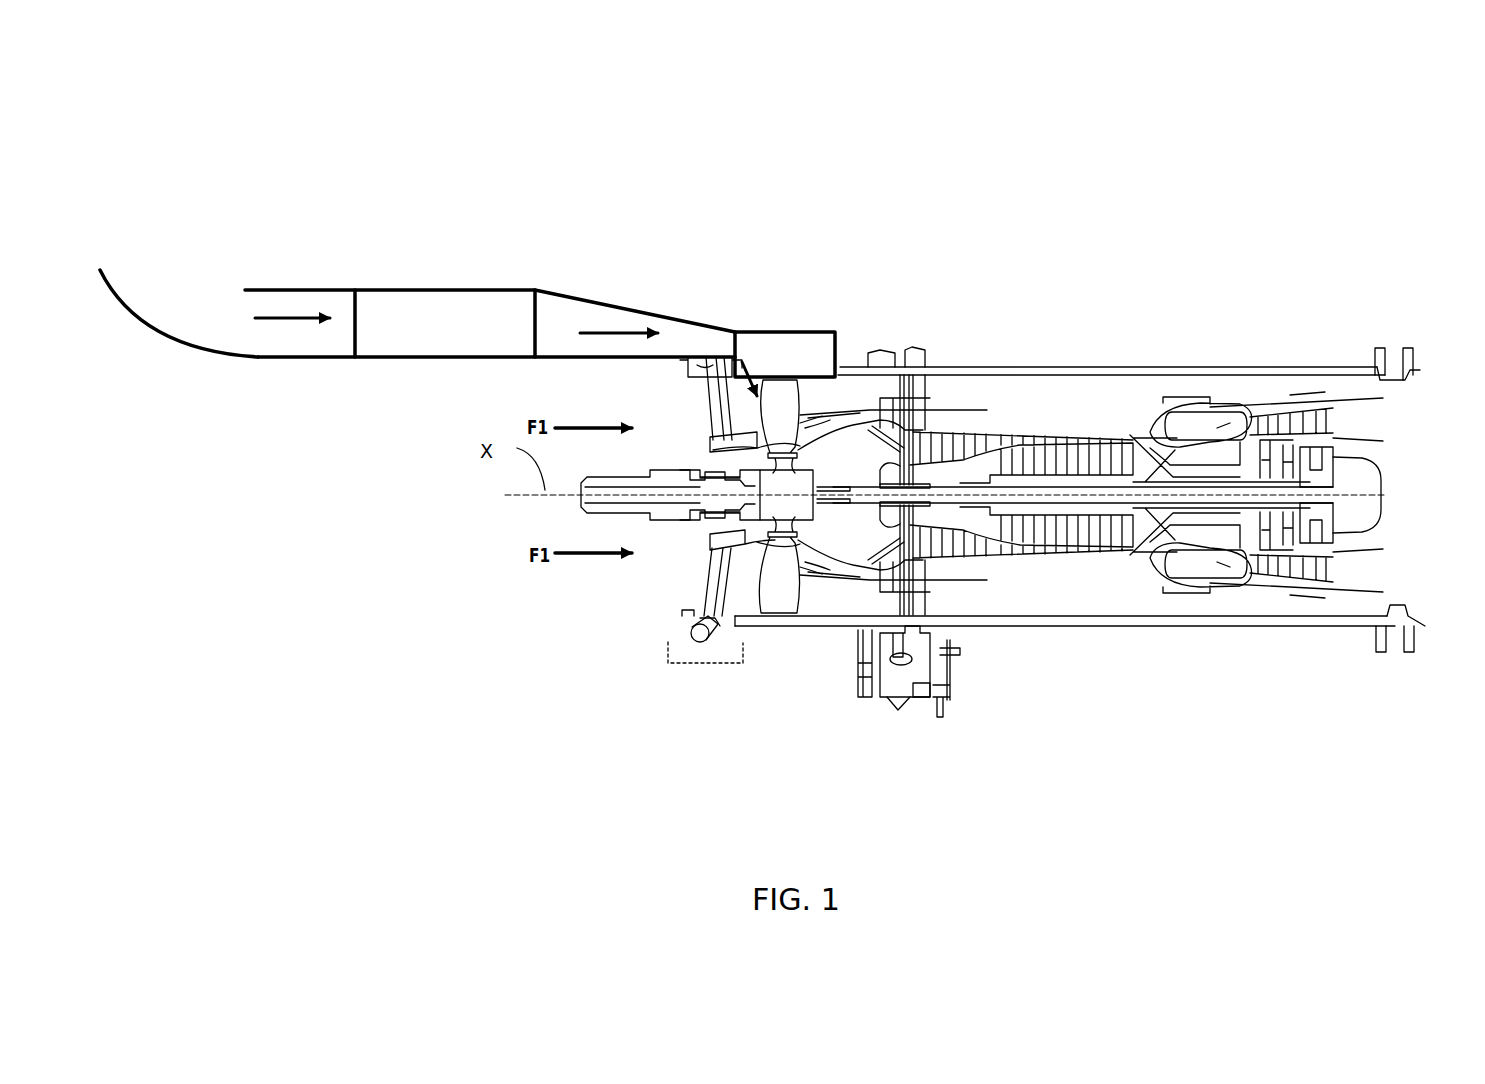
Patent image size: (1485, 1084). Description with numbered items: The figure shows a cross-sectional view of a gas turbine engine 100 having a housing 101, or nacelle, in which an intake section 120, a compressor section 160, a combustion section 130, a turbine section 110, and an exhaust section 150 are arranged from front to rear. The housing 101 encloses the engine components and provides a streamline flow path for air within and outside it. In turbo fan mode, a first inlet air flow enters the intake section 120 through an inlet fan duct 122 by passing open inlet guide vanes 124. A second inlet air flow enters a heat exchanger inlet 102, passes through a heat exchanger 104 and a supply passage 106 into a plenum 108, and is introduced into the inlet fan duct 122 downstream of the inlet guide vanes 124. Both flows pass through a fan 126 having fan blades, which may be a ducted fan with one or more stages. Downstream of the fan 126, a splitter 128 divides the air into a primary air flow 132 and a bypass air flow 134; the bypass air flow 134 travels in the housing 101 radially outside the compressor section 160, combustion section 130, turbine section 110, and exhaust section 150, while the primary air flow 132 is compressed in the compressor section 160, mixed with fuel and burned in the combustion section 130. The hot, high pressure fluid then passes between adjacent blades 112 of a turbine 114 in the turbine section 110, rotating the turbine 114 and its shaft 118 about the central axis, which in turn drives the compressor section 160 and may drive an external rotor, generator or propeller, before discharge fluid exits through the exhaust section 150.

The gas turbine engine 100 is at (1122, 145).
The housing 101 is at (958, 355).
The heat exchanger inlet 102 is at (170, 225).
The heat exchanger 104 is at (447, 300).
The supply passage 106 is at (441, 205).
The plenum 108 is at (836, 333).
The turbine section 110 is at (1297, 378).
The blades 112 is at (1302, 592).
The turbine 114 is at (1255, 603).
The shaft 118 is at (578, 512).
The intake section 120 is at (709, 270).
The inlet fan duct 122 is at (700, 666).
The inlet guide vanes 124 is at (706, 575).
The fan 126 is at (777, 592).
The splitter 128 is at (706, 430).
The combustion section 130 is at (1196, 378).
The primary air flow 132 is at (802, 461).
The bypass air flow 134 is at (832, 408).
The exhaust section 150 is at (1412, 405).
The compressor section 160 is at (1036, 398).